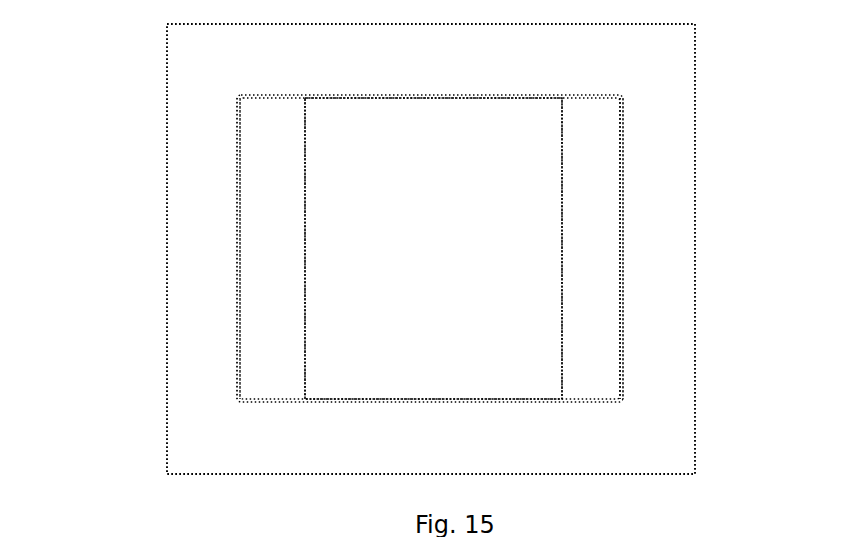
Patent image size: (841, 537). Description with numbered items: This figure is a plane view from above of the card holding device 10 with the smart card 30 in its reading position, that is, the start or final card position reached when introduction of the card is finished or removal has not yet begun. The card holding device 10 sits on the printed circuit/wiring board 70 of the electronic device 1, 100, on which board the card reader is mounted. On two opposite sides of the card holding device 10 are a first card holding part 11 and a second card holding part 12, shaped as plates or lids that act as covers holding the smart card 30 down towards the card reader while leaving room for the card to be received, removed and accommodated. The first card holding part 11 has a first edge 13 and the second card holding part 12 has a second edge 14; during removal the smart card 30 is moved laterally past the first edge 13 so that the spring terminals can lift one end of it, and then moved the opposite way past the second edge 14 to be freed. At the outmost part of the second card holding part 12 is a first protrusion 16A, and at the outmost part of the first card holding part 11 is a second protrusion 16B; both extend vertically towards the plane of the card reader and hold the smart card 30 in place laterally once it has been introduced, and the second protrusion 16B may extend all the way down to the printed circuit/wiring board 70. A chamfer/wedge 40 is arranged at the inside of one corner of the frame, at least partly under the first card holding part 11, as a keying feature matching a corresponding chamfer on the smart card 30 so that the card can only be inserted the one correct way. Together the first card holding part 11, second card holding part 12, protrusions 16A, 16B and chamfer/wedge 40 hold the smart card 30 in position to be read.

The electronic device 1 is at (222, 438).
The printed circuit/wiring board 70 is at (376, 249).
The electronic device 100 is at (399, 249).
The card holding device 10 is at (489, 417).
The smart card 30 is at (423, 157).
The first card holding part 11 is at (590, 195).
The second card holding part 12 is at (285, 160).
The first edge of the first card holding part 13 is at (563, 130).
The second edge of the second card holding part 14 is at (305, 248).
The chamfer/wedge 40 is at (627, 125).
The first protrusion 16A is at (229, 325).
The second protrusion 16B is at (635, 342).